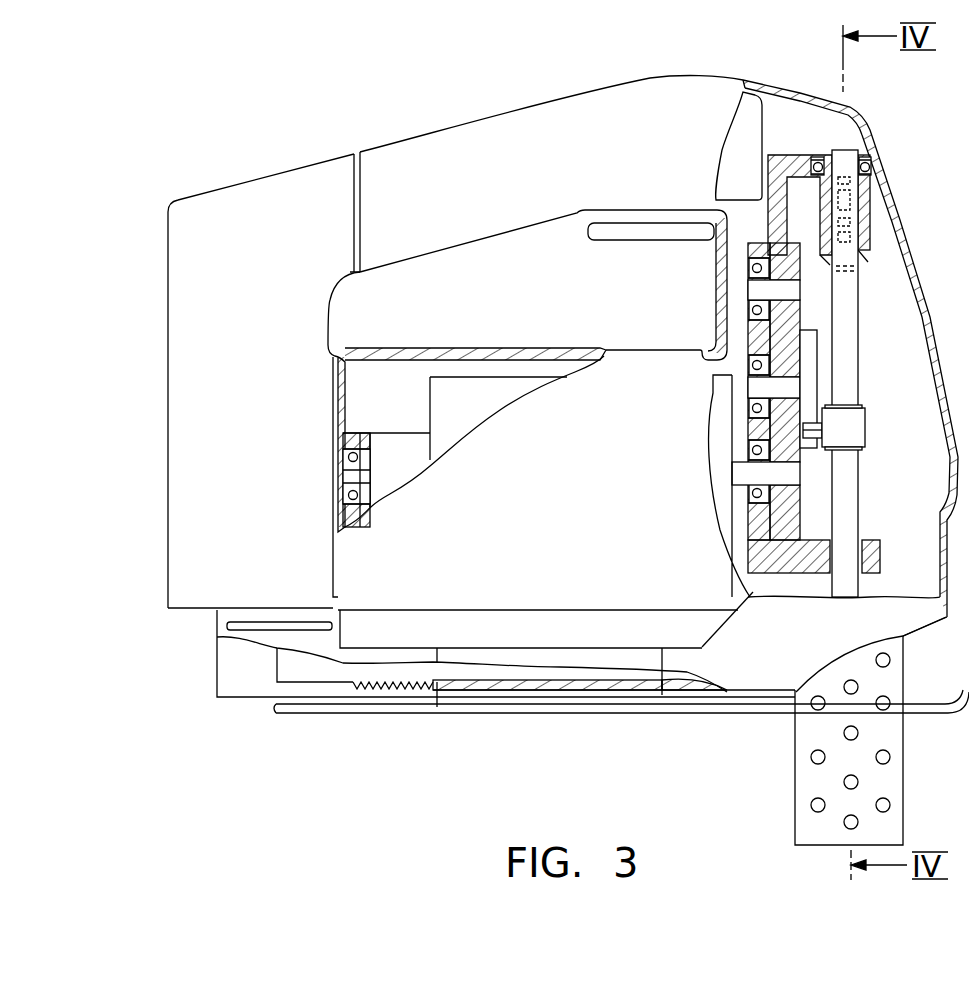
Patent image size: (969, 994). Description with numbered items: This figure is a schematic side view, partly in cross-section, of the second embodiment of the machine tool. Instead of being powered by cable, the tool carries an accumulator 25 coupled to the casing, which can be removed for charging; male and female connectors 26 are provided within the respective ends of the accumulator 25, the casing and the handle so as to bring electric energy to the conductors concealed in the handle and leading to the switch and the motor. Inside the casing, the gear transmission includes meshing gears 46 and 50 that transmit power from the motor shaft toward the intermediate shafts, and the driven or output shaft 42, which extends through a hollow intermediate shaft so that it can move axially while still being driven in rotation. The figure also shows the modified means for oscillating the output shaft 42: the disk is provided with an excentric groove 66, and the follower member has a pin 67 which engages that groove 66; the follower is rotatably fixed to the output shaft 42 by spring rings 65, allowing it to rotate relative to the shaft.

The accumulator 25 is at (242, 504).
The male and female connectors 26 is at (356, 213).
The output shaft 42 is at (843, 317).
The gear 46 is at (775, 493).
The gear 50 is at (778, 345).
The spring rings 65 is at (848, 406).
The excentric groove 66 is at (808, 432).
The pin 67 is at (808, 428).